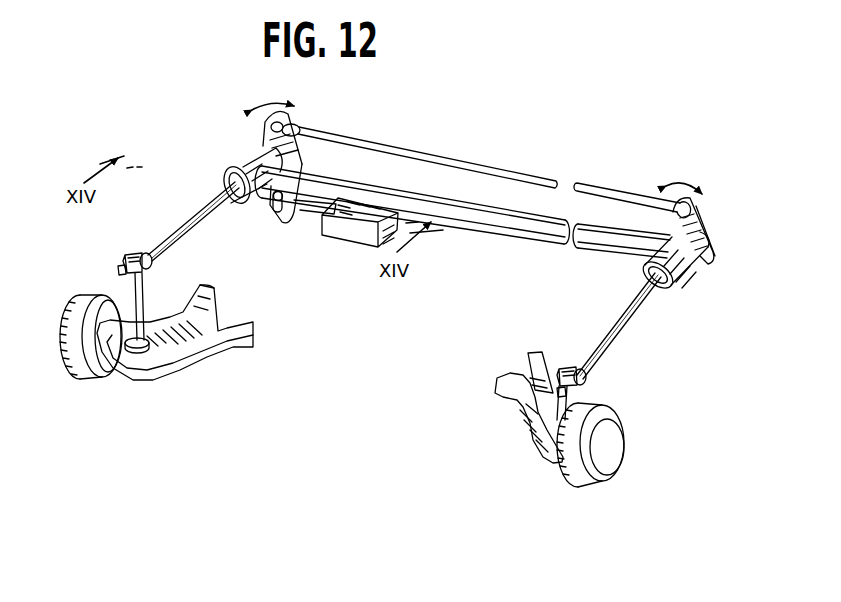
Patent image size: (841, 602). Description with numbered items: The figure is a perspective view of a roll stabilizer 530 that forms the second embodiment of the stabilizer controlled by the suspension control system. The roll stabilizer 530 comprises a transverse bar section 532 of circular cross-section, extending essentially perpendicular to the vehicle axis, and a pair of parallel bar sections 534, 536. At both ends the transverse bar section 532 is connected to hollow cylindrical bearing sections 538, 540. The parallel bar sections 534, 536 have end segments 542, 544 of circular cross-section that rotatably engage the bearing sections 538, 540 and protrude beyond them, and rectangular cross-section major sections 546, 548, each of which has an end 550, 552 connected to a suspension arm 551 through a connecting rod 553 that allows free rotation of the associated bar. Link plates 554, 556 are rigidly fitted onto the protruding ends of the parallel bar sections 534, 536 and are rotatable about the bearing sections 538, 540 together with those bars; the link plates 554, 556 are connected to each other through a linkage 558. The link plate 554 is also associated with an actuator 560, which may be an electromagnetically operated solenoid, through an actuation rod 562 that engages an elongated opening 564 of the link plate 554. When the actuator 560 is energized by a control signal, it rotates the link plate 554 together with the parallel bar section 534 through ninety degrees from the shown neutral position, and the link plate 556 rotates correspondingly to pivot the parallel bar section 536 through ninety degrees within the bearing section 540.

The roll stabilizer 530 is at (467, 236).
The transverse bar section 532 is at (519, 241).
The parallel bar section 534 is at (209, 238).
The parallel bar section 536 is at (657, 311).
The bearing section 538 is at (258, 164).
The bearing section 540 is at (690, 266).
The end segment 542 is at (229, 183).
The end segment 544 is at (667, 286).
The major section 546 is at (193, 228).
The major section 548 is at (631, 328).
The end 550 is at (136, 256).
The end 552 is at (575, 367).
The connecting rod 553 is at (146, 284).
The suspension arm 551 is at (210, 357).
The link plate 554 is at (270, 124).
The link plate 556 is at (693, 218).
The linkage 558 is at (478, 166).
The actuator 560 is at (350, 246).
The actuation rod 562 is at (312, 216).
The elongated opening 564 is at (277, 208).